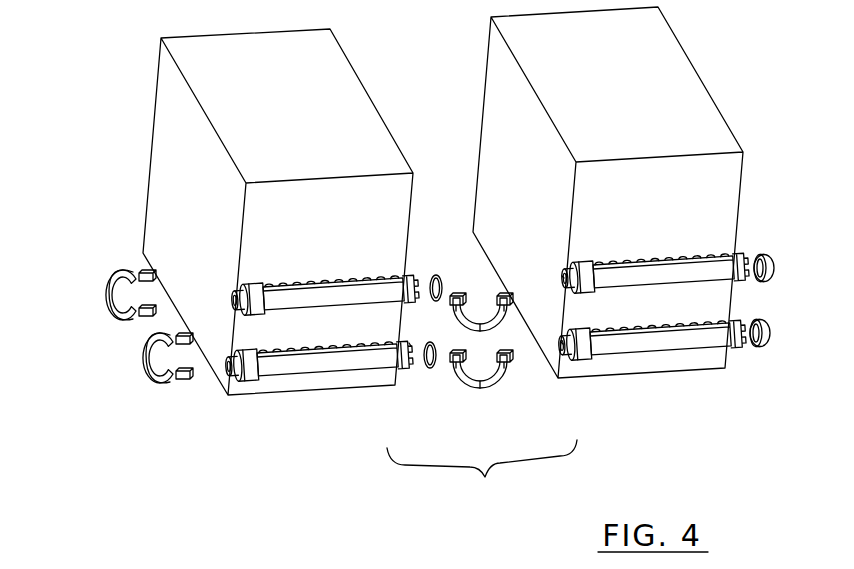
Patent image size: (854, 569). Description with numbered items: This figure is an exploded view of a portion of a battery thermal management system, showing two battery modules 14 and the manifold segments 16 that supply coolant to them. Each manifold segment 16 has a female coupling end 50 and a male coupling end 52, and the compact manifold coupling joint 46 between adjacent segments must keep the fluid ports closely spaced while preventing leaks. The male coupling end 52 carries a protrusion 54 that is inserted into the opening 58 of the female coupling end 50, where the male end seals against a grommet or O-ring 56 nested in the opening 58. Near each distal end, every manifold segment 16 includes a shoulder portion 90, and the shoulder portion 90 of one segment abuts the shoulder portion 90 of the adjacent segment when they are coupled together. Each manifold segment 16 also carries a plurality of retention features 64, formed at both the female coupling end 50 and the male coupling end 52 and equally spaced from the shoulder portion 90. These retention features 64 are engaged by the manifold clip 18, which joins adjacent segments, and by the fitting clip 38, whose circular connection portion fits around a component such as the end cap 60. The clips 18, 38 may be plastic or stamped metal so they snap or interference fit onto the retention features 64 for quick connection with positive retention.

The battery module 14 is at (160, 146).
The manifold segment 16 is at (322, 288).
The manifold clip 18 is at (482, 313).
The fitting clip 38 is at (141, 357).
The manifold coupling joint 46 is at (482, 473).
The female coupling end 50 is at (413, 272).
The male coupling end 52 is at (231, 368).
The protrusion 54 is at (562, 343).
The O-ring 56 is at (438, 274).
The opening 58 is at (411, 347).
The end cap 60 is at (771, 330).
The retention feature 64 is at (265, 286).
The shoulder portion 90 is at (257, 284).